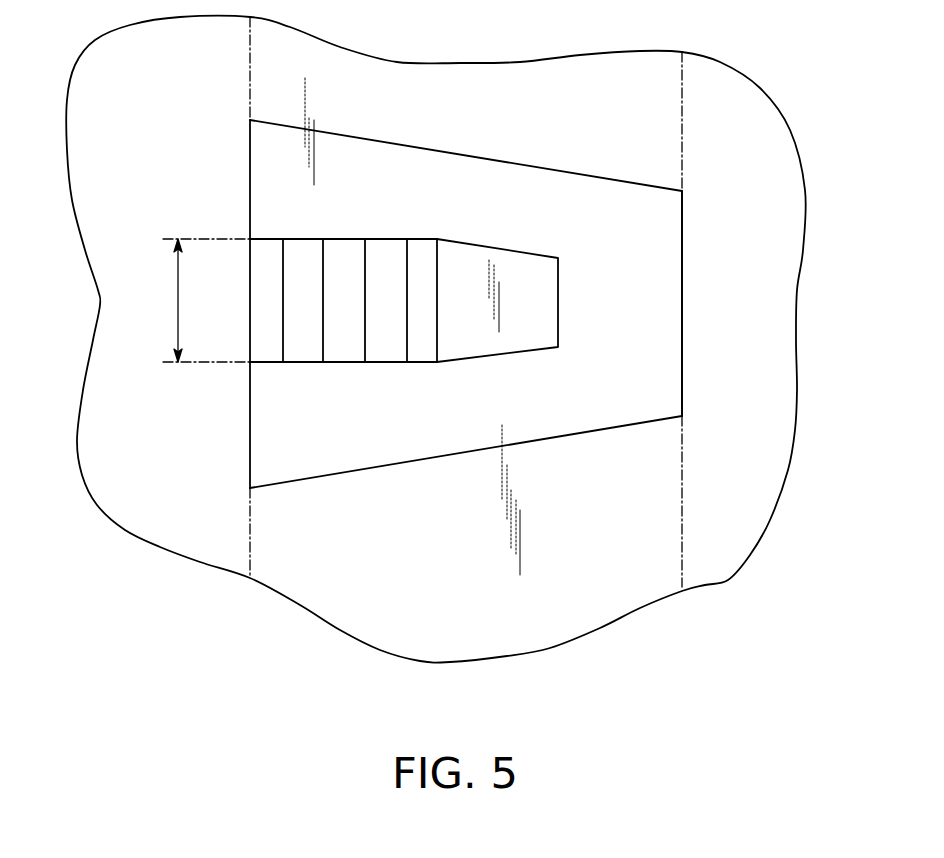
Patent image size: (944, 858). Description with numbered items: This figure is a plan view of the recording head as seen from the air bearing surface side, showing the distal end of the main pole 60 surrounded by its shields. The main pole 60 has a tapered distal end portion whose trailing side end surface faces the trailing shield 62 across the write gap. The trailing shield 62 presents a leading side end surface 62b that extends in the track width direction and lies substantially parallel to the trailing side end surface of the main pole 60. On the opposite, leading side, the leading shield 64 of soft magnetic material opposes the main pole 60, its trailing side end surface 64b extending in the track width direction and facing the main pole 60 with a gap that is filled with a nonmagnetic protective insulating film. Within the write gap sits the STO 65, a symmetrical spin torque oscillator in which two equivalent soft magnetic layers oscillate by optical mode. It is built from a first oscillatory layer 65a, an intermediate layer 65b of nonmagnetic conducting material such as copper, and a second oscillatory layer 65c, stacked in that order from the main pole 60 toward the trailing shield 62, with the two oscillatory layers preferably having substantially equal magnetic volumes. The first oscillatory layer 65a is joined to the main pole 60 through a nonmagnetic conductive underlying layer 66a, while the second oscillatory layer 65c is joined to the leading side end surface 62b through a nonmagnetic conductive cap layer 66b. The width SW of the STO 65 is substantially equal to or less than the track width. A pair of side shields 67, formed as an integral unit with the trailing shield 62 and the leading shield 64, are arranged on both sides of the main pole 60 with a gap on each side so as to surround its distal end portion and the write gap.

The main pole 60 is at (523, 333).
The trailing shield 62 is at (117, 345).
The leading side end surface 62b is at (250, 408).
The leading shield 64 is at (772, 293).
The trailing side end surface 64b is at (682, 367).
The STO 65 is at (374, 413).
The first oscillatory layer 65a is at (392, 363).
The intermediate layer 65b is at (346, 363).
The second oscillatory layer 65c is at (303, 363).
The nonmagnetic conductive layer 66a is at (423, 363).
The nonmagnetic conductive layer 66b is at (267, 363).
The side shields 67 is at (526, 85).
The width of the STO SW is at (194, 300).